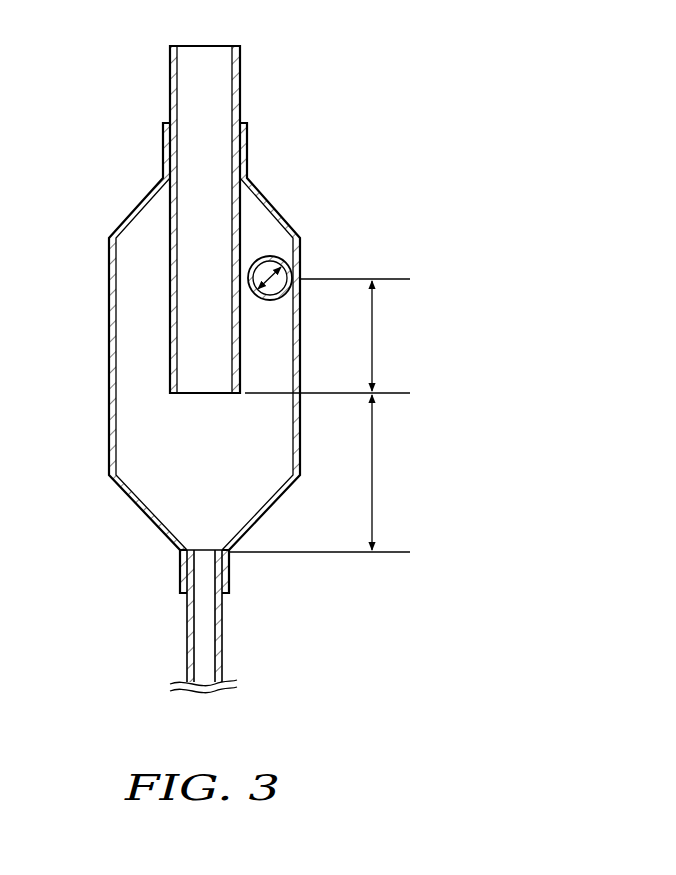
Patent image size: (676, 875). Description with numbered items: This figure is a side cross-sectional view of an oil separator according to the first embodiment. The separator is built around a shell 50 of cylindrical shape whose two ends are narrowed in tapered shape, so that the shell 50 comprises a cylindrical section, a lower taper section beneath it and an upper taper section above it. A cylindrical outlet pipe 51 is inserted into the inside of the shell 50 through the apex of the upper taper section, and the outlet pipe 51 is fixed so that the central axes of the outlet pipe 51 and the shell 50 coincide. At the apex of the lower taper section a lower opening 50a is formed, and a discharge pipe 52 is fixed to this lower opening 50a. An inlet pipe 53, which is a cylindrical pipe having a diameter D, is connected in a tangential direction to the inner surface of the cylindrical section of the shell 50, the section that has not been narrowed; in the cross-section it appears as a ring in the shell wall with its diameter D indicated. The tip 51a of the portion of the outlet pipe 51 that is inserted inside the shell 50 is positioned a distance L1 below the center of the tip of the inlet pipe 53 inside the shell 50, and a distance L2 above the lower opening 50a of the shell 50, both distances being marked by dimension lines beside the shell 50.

The shell 50 is at (108, 333).
The lower opening 50a is at (208, 583).
The outlet pipe 51 is at (241, 72).
The tip of outlet pipe 51a is at (173, 394).
The discharge pipe 52 is at (223, 646).
The inlet pipe 53 is at (270, 300).
The diameter of inlet pipe D is at (272, 257).
The distance L1 is at (331, 336).
The distance L2 is at (323, 473).